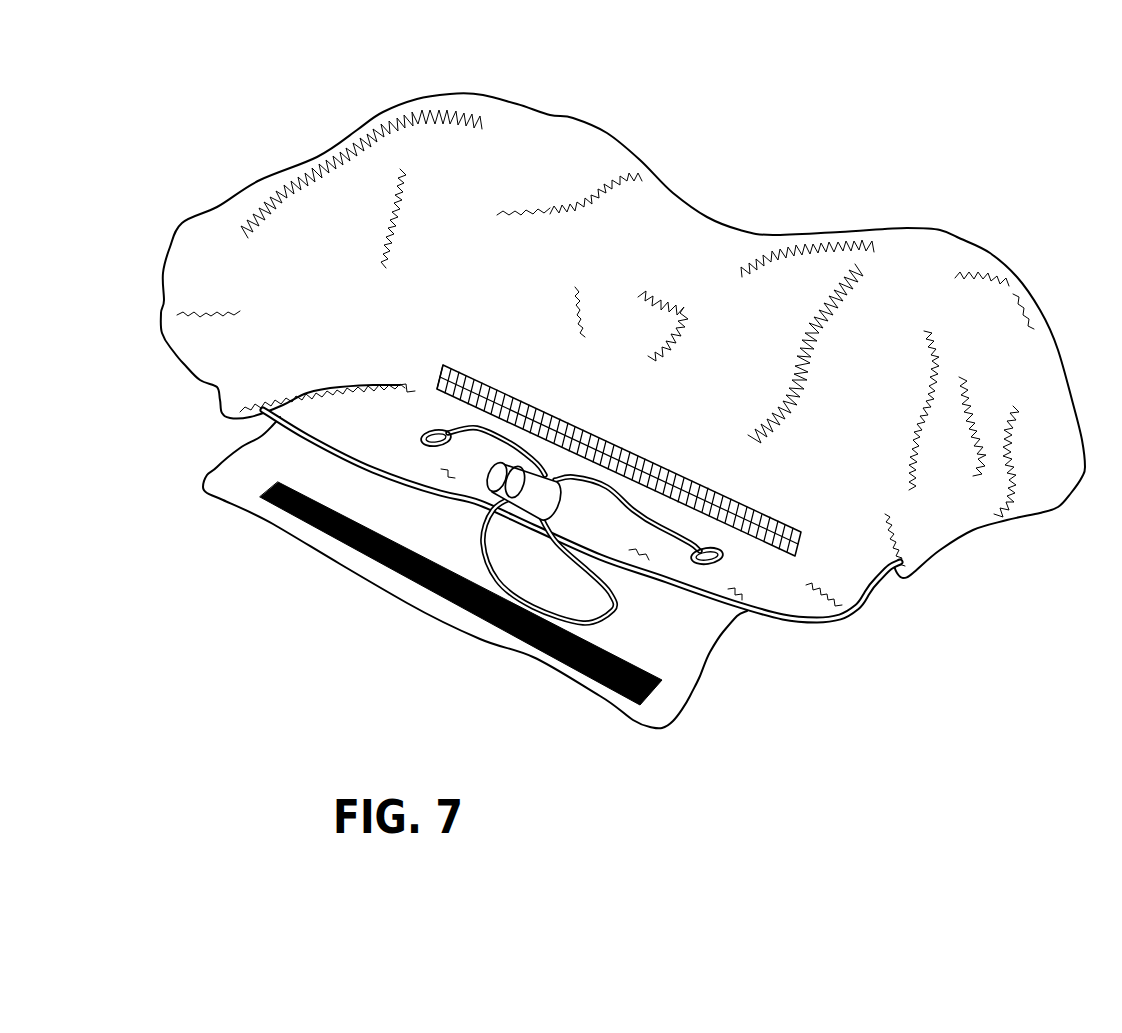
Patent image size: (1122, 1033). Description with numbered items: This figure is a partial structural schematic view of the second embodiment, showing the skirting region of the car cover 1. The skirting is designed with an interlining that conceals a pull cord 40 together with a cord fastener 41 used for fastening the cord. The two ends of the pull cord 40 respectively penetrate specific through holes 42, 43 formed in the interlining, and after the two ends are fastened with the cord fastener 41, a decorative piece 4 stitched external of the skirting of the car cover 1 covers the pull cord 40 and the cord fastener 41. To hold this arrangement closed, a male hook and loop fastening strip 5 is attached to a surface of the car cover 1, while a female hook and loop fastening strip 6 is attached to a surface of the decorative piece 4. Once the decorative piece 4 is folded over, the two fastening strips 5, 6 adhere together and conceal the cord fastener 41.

The car cover 1 is at (546, 173).
The decorative piece 4 is at (243, 457).
The male hook and loop fastening strip 5 is at (787, 540).
The female hook and loop fastening strip 6 is at (287, 510).
The pull cord 40 is at (483, 572).
The cord fastener 41 is at (487, 473).
The through hole 42 is at (437, 447).
The through hole 43 is at (725, 556).